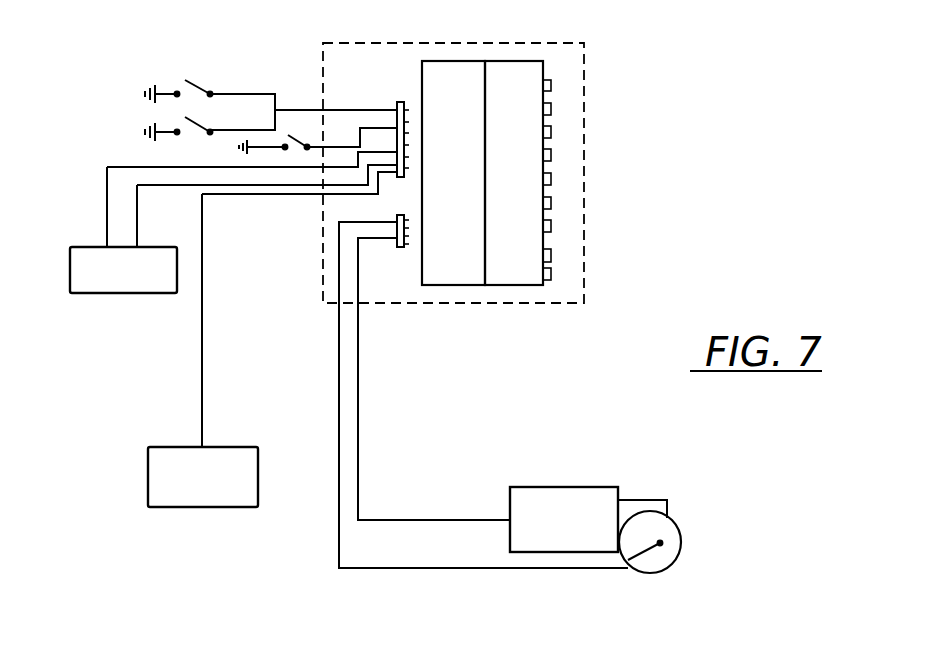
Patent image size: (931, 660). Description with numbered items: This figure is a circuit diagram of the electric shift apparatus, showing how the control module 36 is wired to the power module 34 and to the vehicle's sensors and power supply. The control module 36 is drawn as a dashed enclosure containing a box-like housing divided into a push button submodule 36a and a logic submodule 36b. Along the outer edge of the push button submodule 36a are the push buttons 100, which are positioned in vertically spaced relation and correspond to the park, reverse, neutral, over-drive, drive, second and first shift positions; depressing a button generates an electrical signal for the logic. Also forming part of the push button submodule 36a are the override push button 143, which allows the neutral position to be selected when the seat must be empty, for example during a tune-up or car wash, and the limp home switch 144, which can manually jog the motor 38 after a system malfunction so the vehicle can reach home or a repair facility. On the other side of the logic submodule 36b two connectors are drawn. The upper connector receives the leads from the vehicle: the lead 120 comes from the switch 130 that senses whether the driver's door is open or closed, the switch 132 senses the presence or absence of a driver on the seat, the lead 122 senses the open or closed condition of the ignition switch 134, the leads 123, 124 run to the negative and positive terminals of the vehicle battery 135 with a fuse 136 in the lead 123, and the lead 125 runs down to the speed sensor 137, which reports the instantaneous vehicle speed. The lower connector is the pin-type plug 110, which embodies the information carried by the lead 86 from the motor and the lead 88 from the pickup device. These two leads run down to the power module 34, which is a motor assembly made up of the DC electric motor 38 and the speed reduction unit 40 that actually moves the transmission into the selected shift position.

The power module 34 is at (625, 498).
The control module 36 is at (457, 61).
The push button submodule 36a is at (529, 150).
The logic submodule 36b is at (468, 150).
The DC electric motor 38 is at (562, 487).
The speed reduction unit 40 is at (670, 533).
The lead 86 is at (362, 495).
The lead 88 is at (339, 520).
The push buttons 100 is at (551, 83).
The pin-type plug 110 is at (397, 217).
The lead 120 is at (247, 94).
The lead 122 is at (343, 146).
The lead 123 is at (107, 203).
The lead 124 is at (137, 235).
The lead 125 is at (202, 393).
The switch 130 is at (178, 82).
The switch 132 is at (189, 128).
The ignition switch 134 is at (297, 151).
The vehicle battery 135 is at (107, 294).
The fuse 136 is at (140, 167).
The speed sensor 137 is at (148, 478).
The override push button 143 is at (551, 255).
The limp home switch 144 is at (551, 271).